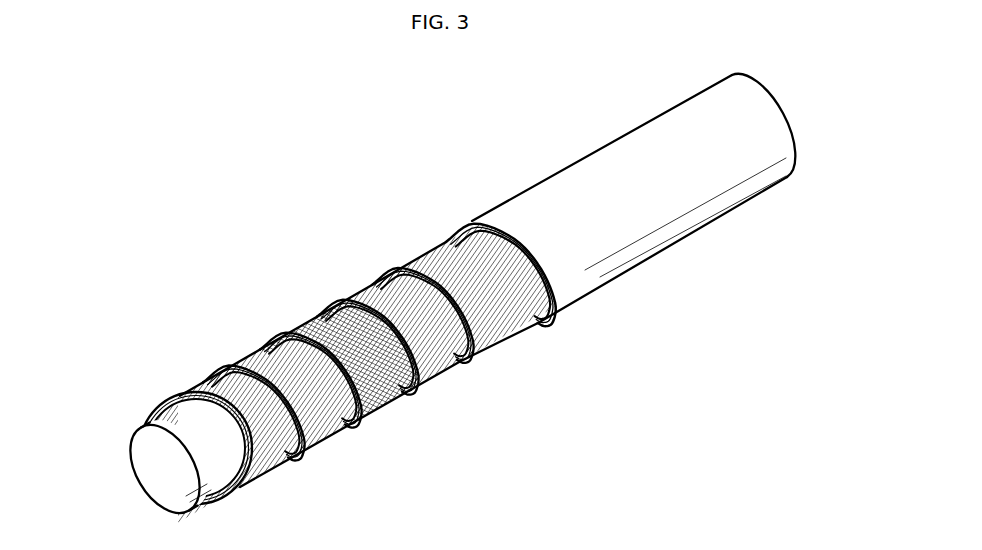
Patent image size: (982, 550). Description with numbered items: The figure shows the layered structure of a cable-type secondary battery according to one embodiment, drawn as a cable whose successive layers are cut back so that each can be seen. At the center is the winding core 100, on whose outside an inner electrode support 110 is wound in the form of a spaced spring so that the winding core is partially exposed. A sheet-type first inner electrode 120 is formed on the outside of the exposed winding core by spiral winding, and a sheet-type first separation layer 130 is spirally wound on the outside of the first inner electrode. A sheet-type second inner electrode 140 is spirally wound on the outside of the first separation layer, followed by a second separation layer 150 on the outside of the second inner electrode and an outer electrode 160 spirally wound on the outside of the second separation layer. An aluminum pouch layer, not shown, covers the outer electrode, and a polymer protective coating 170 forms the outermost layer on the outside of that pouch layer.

The winding core 100 is at (148, 448).
The inner electrode support 110 is at (178, 398).
The first inner electrode 120 is at (270, 450).
The first separation layer 130 is at (326, 413).
The second inner electrode 140 is at (385, 380).
The second separation layer 150 is at (443, 352).
The outer electrode 160 is at (500, 324).
The polymer protective coating 170 is at (617, 250).